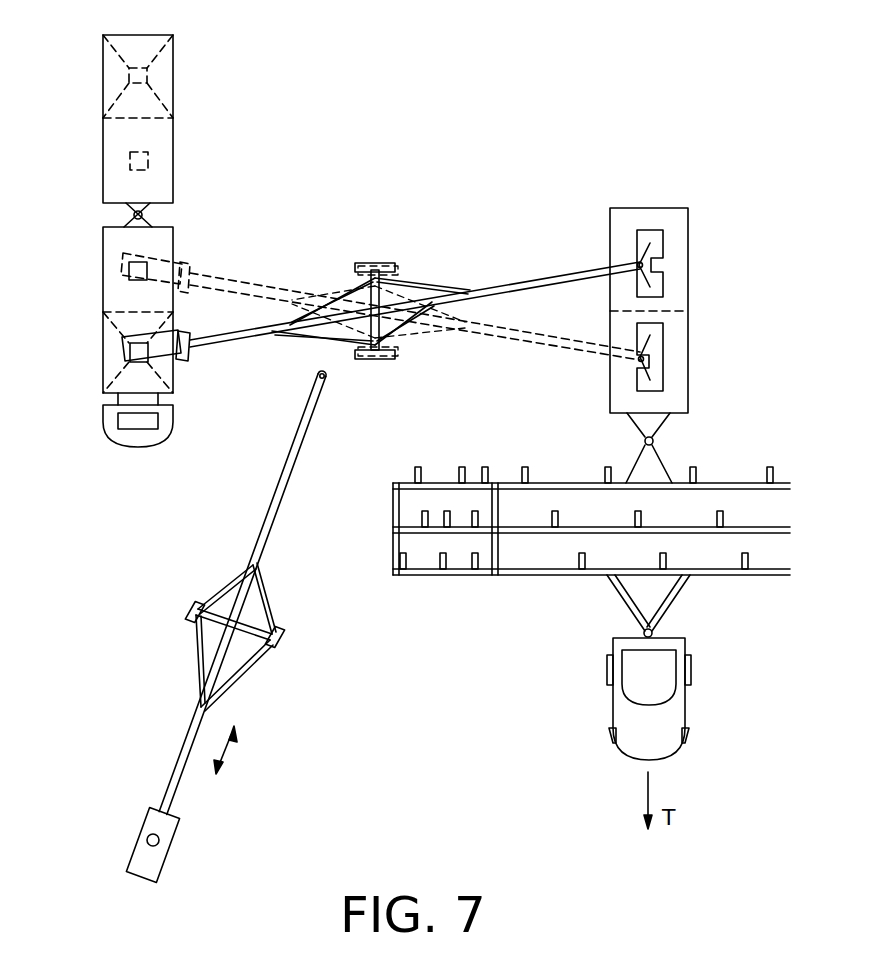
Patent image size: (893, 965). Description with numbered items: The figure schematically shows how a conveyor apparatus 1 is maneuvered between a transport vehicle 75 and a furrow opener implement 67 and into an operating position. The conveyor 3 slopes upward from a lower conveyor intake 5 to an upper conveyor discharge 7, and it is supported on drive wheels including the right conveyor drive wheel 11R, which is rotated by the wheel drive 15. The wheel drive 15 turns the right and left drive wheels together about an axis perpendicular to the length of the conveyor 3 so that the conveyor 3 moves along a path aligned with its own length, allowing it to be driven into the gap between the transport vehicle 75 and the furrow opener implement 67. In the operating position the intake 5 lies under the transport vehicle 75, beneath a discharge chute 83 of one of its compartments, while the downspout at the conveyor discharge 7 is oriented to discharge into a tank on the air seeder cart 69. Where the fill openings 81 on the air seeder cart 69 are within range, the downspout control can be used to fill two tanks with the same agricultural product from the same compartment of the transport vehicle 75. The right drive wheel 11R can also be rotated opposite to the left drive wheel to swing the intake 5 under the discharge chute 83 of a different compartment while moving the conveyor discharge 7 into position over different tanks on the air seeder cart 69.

The conveyor apparatus 1 is at (262, 682).
The conveyor 3 is at (500, 276).
The conveyor intake 5 is at (157, 256).
The conveyor discharge 7 is at (655, 268).
The right conveyor drive wheel 11R is at (362, 263).
The wheel drive 15 is at (405, 282).
The furrow opener implement 67 is at (545, 578).
The air seeder cart 69 is at (672, 207).
The transport vehicle 75 is at (103, 355).
The fill openings 81 is at (634, 381).
The discharge chute 83 is at (128, 266).